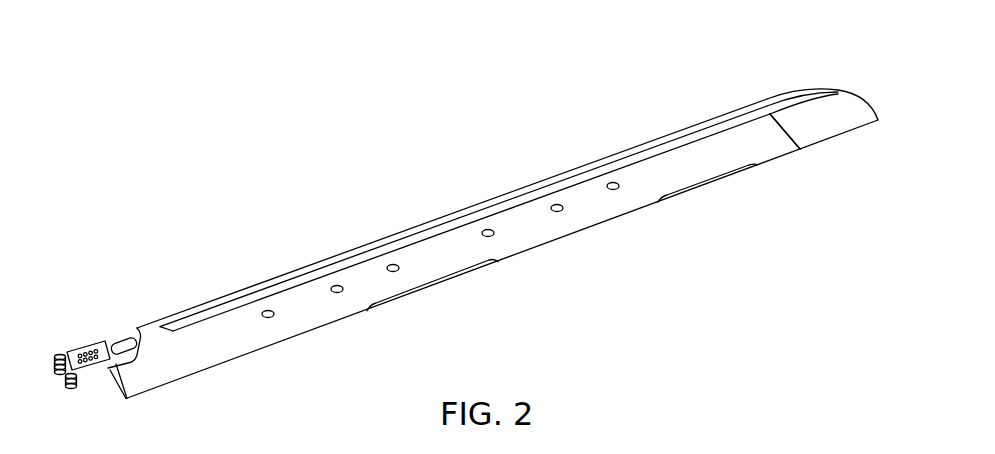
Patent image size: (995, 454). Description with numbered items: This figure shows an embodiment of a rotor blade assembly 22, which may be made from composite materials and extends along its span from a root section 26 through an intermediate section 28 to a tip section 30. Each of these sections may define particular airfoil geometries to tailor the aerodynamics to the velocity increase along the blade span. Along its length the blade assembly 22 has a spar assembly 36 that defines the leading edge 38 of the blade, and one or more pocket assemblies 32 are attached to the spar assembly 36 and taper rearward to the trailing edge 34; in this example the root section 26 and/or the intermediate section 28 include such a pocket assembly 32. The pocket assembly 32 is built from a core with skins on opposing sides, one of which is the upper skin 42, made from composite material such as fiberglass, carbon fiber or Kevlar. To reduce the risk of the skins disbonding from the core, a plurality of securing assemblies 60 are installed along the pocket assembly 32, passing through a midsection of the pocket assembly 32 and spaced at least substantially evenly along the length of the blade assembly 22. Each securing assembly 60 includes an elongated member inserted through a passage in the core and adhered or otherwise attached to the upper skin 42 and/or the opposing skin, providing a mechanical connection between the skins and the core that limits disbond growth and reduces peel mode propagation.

The rotor blade assembly 22 is at (164, 158).
The root section 26 is at (141, 280).
The intermediate section 28 is at (413, 191).
The tip section 30 is at (788, 77).
The pocket assembly 32 is at (98, 342).
The trailing edge 34 is at (275, 347).
The spar assembly 36 is at (245, 290).
The leading edge 38 is at (568, 170).
The upper skin 42 is at (533, 224).
The securing assembly 60 is at (393, 273).